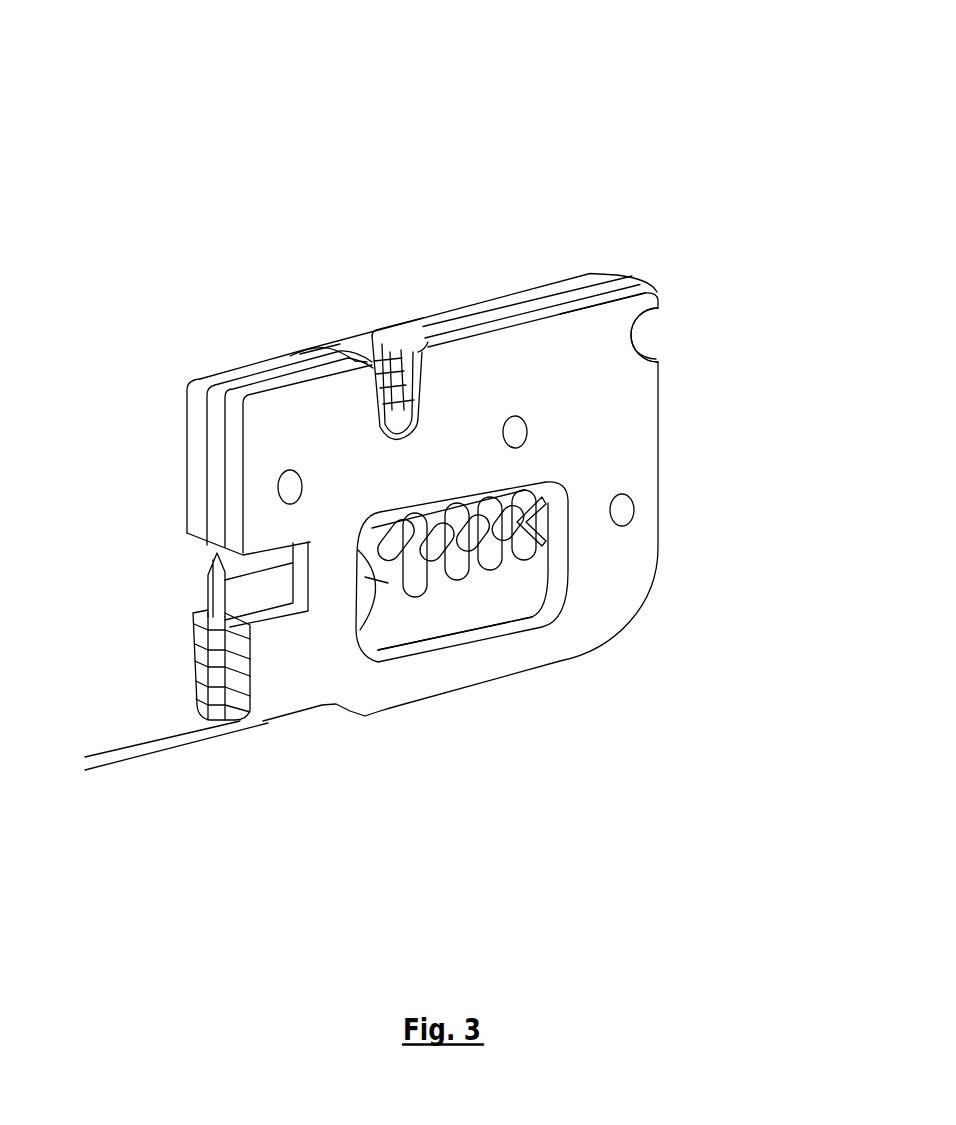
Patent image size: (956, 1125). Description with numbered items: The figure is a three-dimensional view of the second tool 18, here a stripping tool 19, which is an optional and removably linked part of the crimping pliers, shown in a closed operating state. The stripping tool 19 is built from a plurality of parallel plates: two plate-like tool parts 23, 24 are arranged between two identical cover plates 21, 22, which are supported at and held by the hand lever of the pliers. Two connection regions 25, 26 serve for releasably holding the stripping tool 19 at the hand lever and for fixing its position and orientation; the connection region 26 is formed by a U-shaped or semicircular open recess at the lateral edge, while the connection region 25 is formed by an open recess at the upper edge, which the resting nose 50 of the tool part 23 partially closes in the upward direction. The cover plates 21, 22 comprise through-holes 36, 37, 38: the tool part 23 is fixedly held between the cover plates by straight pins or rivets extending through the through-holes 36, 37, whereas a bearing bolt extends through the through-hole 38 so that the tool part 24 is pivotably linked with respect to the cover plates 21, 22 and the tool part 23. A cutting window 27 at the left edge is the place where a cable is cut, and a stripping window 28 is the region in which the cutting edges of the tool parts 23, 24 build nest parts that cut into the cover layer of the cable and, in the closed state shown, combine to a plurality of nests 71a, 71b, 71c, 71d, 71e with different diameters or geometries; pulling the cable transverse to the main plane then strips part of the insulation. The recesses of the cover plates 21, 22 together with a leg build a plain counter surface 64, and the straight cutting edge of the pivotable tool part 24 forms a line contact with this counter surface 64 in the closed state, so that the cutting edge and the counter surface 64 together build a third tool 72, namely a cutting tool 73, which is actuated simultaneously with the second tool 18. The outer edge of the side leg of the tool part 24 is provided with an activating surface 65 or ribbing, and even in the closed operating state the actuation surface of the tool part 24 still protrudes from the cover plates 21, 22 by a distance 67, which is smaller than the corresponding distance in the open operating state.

The second tool 18 is at (361, 220).
The stripping tool 19 is at (443, 426).
The cover plate 21 is at (433, 323).
The cover plate 22 is at (594, 297).
The tool part 23 is at (476, 489).
The tool part 24 is at (481, 605).
The connection region 25 is at (347, 340).
The connection region 26 is at (678, 333).
The cutting window 27 is at (190, 586).
The stripping window 28 is at (418, 641).
The through-hole 36 is at (288, 483).
The through-hole 37 is at (515, 438).
The through-hole 38 is at (617, 510).
The resting nose 50 is at (392, 380).
The counter surface 64 is at (203, 540).
The activating surface 65 is at (217, 673).
The distance 67 is at (100, 703).
The nest 71a is at (357, 566).
The nest 71b is at (394, 540).
The nest 71c is at (436, 534).
The nest 71d is at (472, 532).
The nest 71e is at (511, 514).
The third tool 72 is at (175, 610).
The cutting tool 73 is at (178, 662).